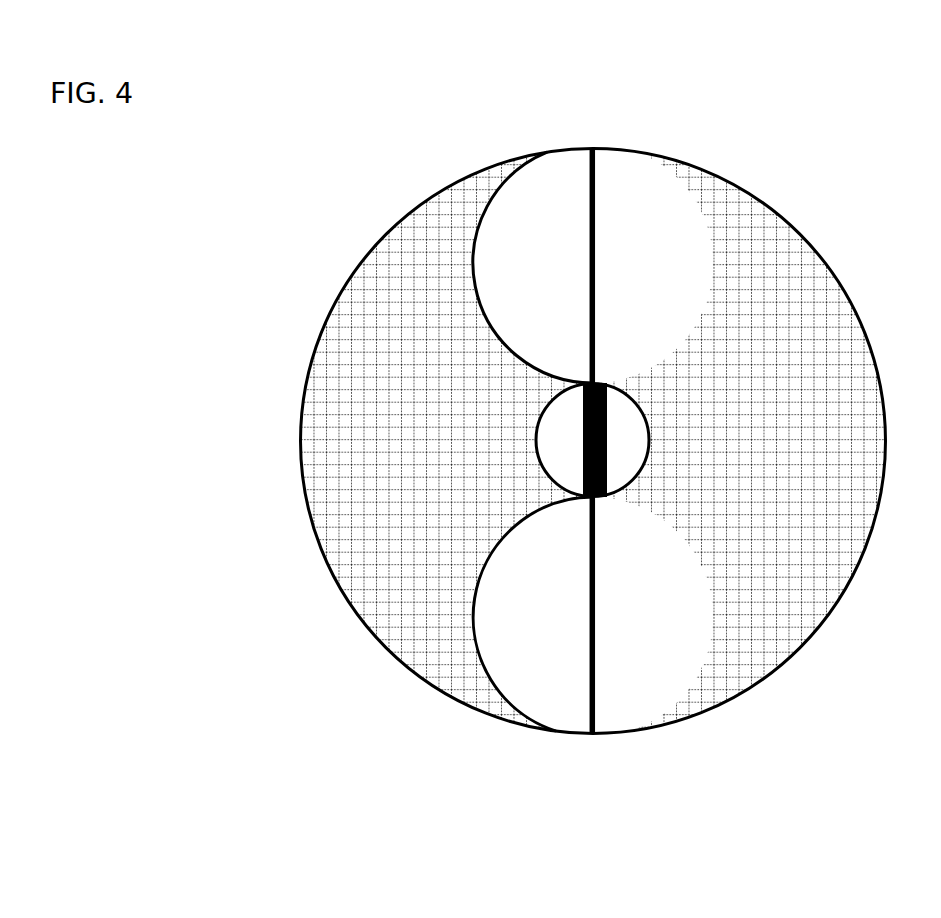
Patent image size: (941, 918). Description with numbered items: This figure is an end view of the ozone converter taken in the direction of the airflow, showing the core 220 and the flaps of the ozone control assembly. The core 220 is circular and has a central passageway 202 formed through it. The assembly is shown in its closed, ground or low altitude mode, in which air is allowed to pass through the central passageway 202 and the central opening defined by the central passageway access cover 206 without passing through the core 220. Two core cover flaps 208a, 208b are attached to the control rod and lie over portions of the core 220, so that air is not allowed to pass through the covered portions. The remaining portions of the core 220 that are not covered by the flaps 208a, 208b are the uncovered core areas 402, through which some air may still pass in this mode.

The uncovered core areas 402 is at (722, 227).
The core 220 is at (402, 333).
The core cover flap 208a is at (555, 305).
The core cover flap 208b is at (562, 690).
The central passageway access cover 206 is at (578, 449).
The central passageway 202 is at (617, 457).